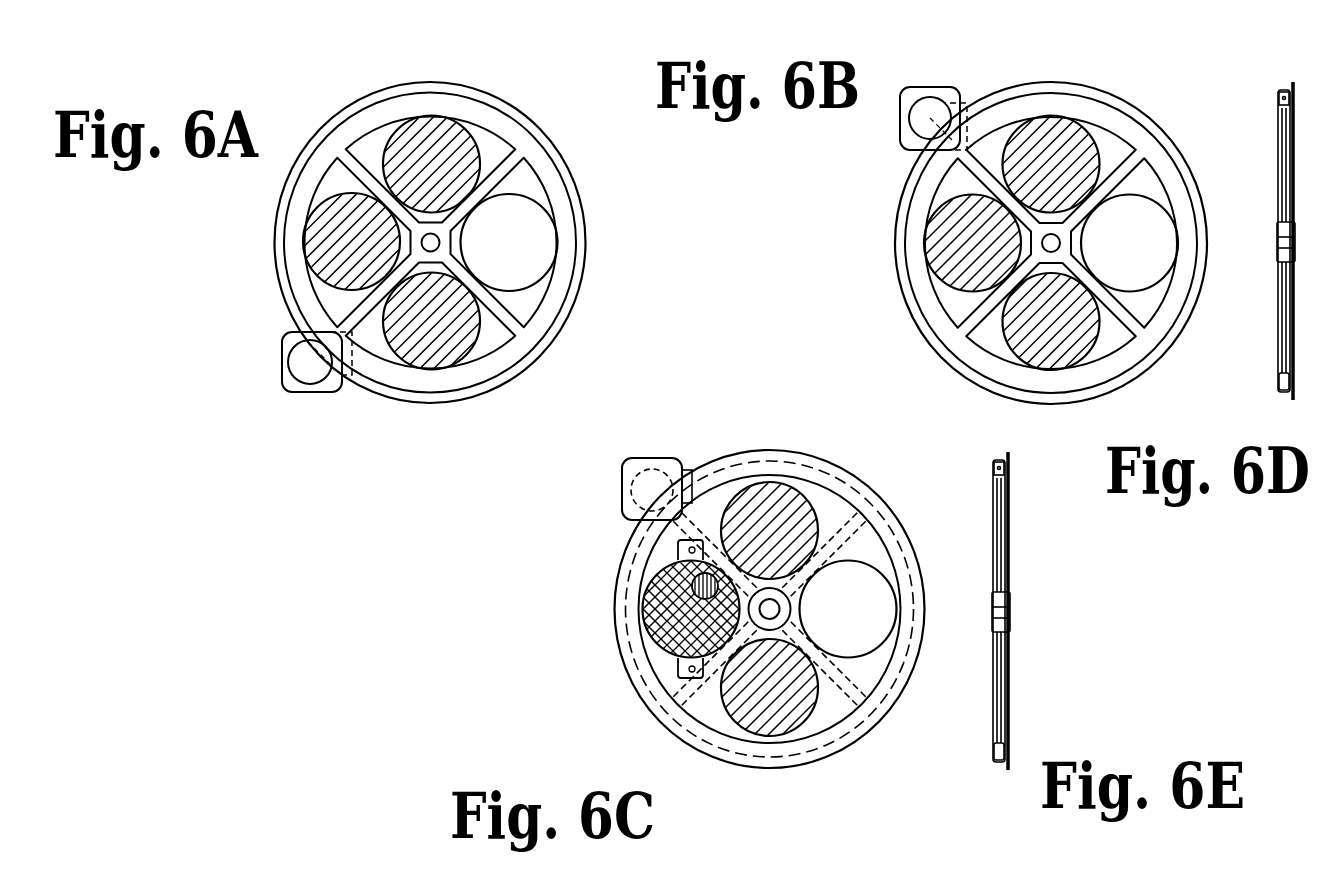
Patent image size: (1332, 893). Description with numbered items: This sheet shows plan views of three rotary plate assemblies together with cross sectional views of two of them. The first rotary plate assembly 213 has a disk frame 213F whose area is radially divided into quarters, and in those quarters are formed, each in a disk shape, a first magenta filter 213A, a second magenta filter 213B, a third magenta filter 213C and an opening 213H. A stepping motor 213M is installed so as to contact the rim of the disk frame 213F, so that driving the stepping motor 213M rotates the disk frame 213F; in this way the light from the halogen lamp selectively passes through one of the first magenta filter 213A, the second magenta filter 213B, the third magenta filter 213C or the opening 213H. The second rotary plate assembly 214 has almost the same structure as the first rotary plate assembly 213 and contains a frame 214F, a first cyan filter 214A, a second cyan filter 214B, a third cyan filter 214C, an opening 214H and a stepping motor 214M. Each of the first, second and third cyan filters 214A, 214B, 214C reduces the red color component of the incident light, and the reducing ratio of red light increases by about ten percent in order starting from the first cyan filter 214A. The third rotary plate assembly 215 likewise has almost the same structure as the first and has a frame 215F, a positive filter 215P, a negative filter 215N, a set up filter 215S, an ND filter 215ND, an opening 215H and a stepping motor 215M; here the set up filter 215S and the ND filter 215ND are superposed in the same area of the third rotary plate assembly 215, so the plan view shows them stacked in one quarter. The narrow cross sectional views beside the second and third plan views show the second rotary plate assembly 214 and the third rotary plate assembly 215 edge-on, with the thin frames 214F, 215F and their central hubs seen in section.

In FIG. 6A, the first rotary plate assembly 213 is at (306, 123).
In FIG. 6A, the first magenta filter 213A is at (433, 128).
In FIG. 6A, the second magenta filter 213B is at (435, 345).
In FIG. 6A, the third magenta filter 213C is at (330, 240).
In FIG. 6A, the opening 213H is at (546, 262).
In FIG. 6A, the disk frame 213F is at (545, 318).
In FIG. 6A, the stepping motor 213M is at (300, 372).
In FIG. 6B, the second rotary plate assembly 214 is at (1180, 125).
In FIG. 6D, the second rotary plate assembly 214 is at (1266, 387).
In FIG. 6B, the first cyan filter 214A is at (1053, 128).
In FIG. 6B, the second cyan filter 214B is at (1053, 345).
In FIG. 6B, the third cyan filter 214C is at (950, 240).
In FIG. 6B, the opening 214H is at (1168, 262).
In FIG. 6B, the frame 214F is at (1168, 318).
In FIG. 6B, the stepping motor 214M is at (922, 120).
In FIG. 6C, the third rotary plate assembly 215 is at (900, 493).
In FIG. 6E, the third rotary plate assembly 215 is at (1022, 592).
In FIG. 6C, the positive filter 215P is at (771, 498).
In FIG. 6C, the negative filter 215N is at (768, 715).
In FIG. 6C, the opening 215H is at (888, 630).
In FIG. 6C, the frame 215F is at (885, 688).
In FIG. 6C, the stepping motor 215M is at (645, 490).
In FIG. 6C, the set up filter 215S is at (647, 590).
In FIG. 6C, the ND filter 215ND is at (645, 640).